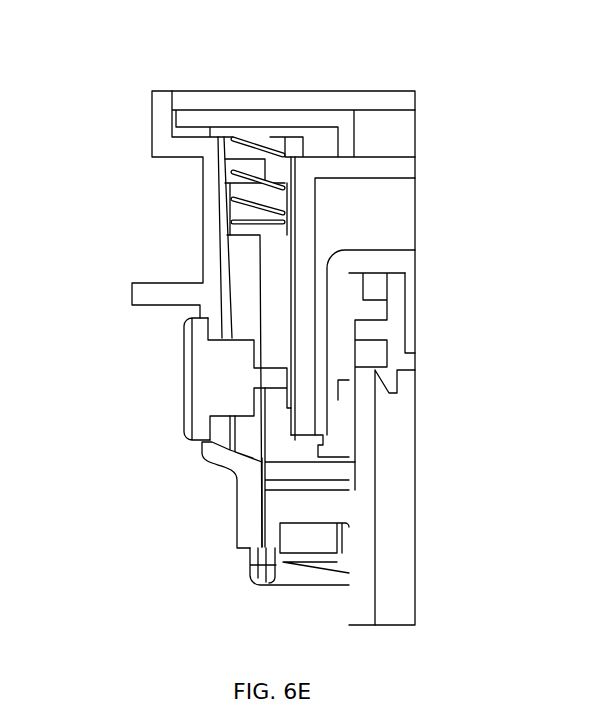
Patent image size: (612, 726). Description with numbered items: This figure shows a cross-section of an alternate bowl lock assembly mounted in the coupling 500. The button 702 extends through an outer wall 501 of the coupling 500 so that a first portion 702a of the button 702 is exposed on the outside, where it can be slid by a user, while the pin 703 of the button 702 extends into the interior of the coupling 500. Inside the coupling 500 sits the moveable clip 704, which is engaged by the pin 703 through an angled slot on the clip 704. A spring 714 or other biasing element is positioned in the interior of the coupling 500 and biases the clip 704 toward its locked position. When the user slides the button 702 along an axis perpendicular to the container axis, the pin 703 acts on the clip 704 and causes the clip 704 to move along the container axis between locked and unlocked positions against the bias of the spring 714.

The outer wall 501 is at (207, 218).
The spring 714 is at (271, 138).
The moveable clip 704 is at (278, 263).
The pin 703 is at (273, 380).
The first portion 702a is at (185, 370).
The button 702 is at (215, 396).
The coupling 500 is at (248, 510).